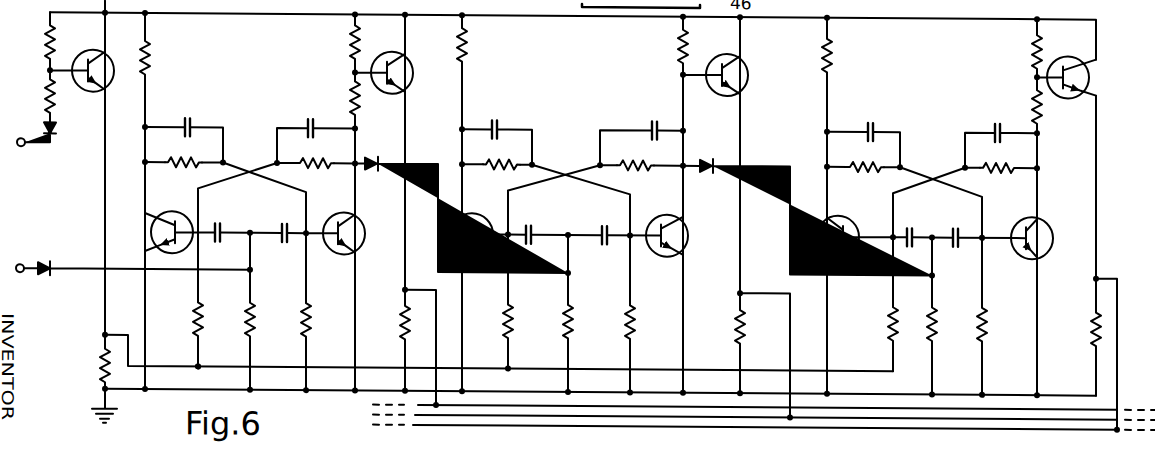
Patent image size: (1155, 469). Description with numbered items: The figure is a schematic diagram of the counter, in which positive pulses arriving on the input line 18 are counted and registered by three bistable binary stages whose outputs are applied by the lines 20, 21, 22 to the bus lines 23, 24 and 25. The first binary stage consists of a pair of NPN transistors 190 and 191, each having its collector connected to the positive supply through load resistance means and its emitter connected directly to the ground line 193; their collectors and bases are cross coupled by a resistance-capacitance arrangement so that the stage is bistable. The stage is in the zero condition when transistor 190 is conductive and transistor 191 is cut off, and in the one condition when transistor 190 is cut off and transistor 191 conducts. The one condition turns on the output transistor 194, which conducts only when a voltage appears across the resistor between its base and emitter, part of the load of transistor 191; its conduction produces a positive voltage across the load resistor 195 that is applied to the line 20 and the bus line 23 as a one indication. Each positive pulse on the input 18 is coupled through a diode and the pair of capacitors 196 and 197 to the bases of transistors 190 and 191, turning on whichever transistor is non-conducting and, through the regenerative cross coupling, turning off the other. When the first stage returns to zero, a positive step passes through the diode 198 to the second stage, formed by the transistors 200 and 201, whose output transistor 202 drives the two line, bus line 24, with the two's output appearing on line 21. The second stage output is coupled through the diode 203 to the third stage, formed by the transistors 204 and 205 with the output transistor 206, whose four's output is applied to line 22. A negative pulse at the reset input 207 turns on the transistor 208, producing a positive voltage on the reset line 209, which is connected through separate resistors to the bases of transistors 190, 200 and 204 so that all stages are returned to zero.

The line 18 is at (22, 263).
The line 20 is at (437, 334).
The line 21 is at (788, 344).
The line 22 is at (1130, 272).
The bus line 23 is at (860, 404).
The bus line 24 is at (910, 414).
The bus line 25 is at (960, 423).
The NPN transistor 190 is at (181, 191).
The NPN transistor 191 is at (345, 212).
The ground line 193 is at (348, 397).
The output transistor 194 is at (412, 75).
The load resistor 195 is at (400, 333).
The capacitor 196 is at (231, 196).
The capacitor 197 is at (290, 220).
The diode 198 is at (371, 167).
The transistor 200 is at (500, 212).
The transistor 201 is at (673, 192).
The output transistor 202 is at (754, 73).
The diode 203 is at (733, 182).
The transistor 204 is at (862, 200).
The transistor 205 is at (1033, 193).
The output transistor 206 is at (1092, 69).
The input 207 is at (25, 129).
The transistor 208 is at (105, 89).
The reset line 209 is at (349, 370).